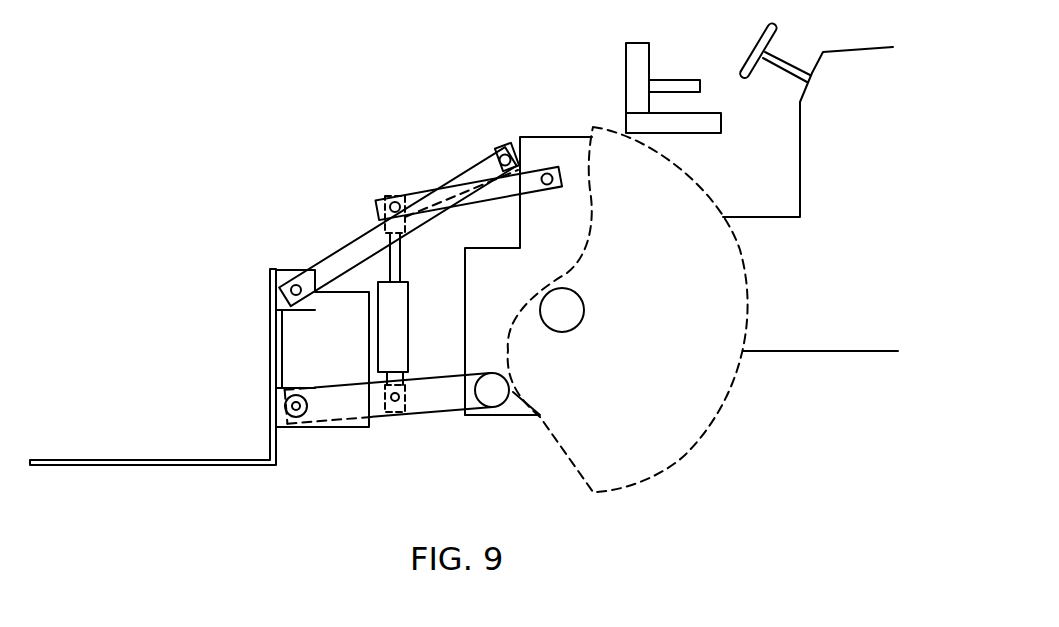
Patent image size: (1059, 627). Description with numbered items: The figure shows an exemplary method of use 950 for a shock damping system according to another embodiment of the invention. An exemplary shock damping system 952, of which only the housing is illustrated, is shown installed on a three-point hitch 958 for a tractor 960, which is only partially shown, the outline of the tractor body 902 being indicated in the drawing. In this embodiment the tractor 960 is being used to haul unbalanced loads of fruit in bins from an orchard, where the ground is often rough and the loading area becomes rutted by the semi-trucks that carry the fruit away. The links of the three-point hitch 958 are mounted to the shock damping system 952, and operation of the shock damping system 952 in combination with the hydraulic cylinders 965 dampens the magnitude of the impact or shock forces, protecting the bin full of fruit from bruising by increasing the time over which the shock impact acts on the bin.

The machine body 902 is at (661, 467).
The method of use 950 is at (395, 76).
The shock damping system 952 is at (300, 349).
The 3-point hitch 958 is at (343, 262).
The tractor 960 is at (304, 161).
The hydraulic cylinders 965 is at (396, 310).